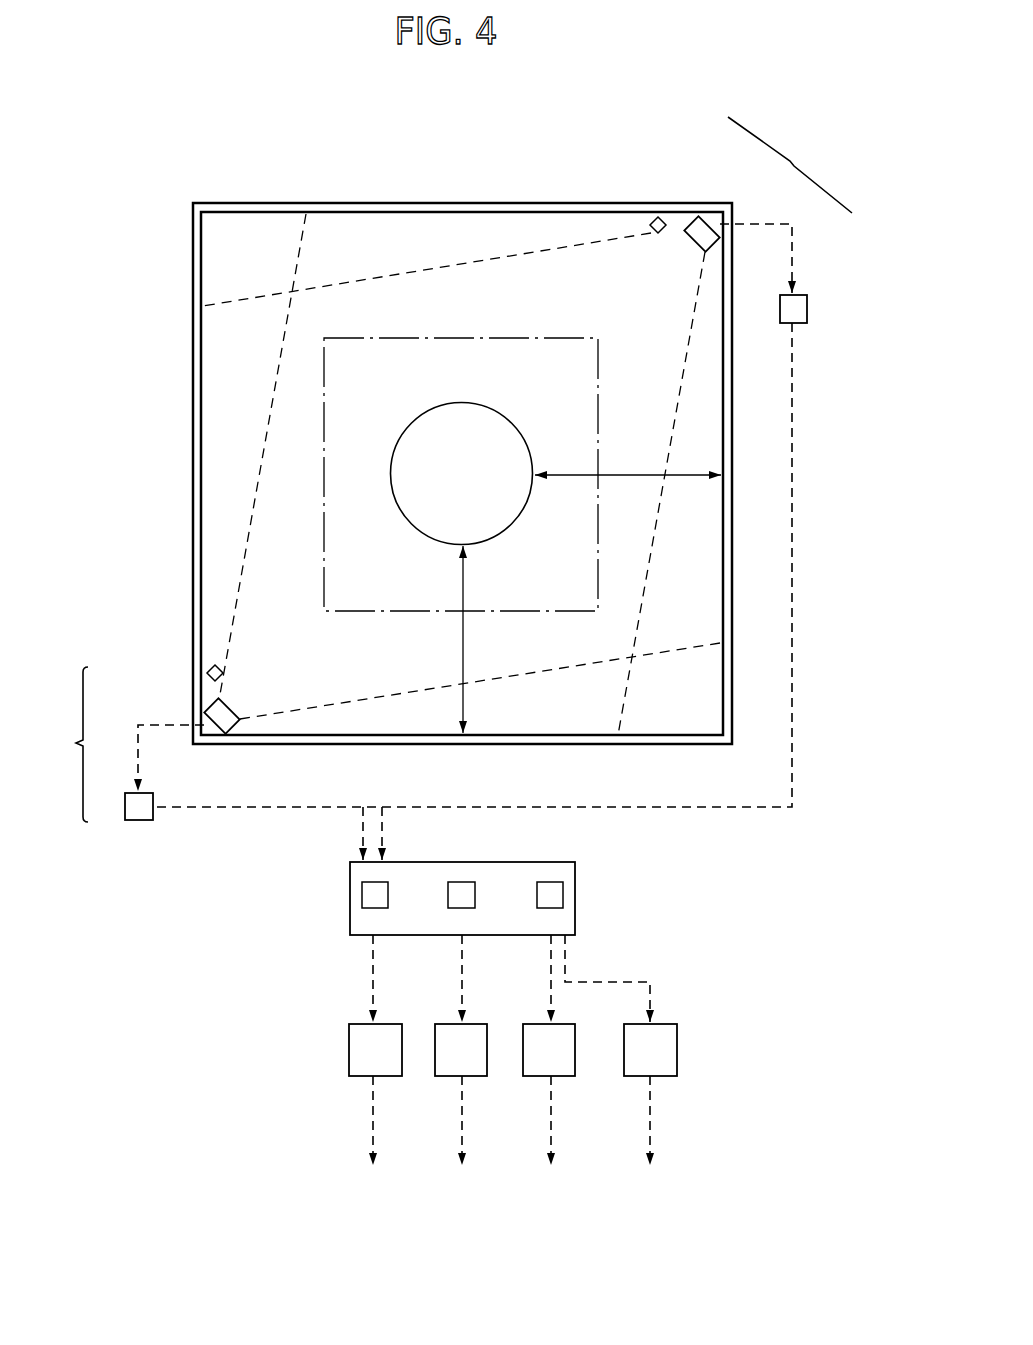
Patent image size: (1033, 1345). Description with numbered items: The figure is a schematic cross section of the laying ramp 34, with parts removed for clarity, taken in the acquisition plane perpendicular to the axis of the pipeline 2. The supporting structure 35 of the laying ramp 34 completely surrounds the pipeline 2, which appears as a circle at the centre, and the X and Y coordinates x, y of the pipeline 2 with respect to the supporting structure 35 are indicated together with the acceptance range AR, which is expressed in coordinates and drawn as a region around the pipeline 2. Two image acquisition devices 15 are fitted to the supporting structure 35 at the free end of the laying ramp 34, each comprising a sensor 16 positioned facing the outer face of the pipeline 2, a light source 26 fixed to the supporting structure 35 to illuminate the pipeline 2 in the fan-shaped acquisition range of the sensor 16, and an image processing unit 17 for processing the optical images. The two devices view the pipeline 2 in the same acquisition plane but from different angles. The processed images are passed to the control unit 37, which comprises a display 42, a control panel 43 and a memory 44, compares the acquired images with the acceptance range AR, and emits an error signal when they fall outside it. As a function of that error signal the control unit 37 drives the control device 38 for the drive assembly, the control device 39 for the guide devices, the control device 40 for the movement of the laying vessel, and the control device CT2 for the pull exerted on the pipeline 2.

The pipeline 2 is at (529, 503).
The image acquisition device 15 is at (801, 147).
The sensor 16 is at (692, 228).
The image processing unit 17 is at (797, 312).
The light source 26 is at (658, 217).
The laying ramp 34 is at (258, 183).
The supporting structure 35 is at (199, 380).
The control unit 37 is at (596, 895).
The control device 38 is at (355, 1058).
The control device 39 is at (447, 1055).
The control device 40 is at (533, 1059).
The display 42 is at (550, 893).
The control panel 43 is at (461, 895).
The memory 44 is at (368, 897).
The acceptance range AR is at (350, 370).
The control device CT2 is at (658, 1048).
The X coordinate x is at (650, 475).
The Y coordinate y is at (466, 655).